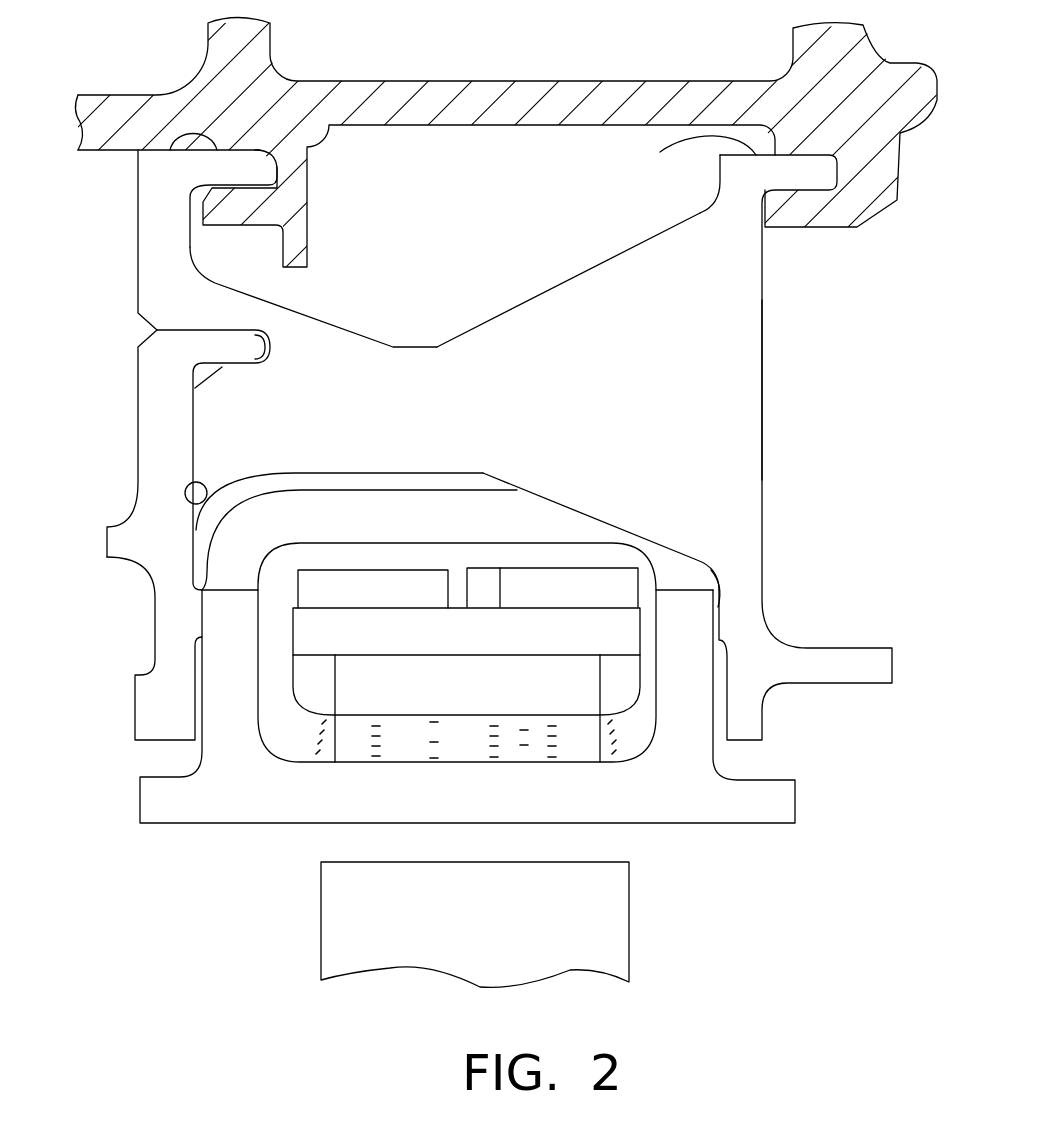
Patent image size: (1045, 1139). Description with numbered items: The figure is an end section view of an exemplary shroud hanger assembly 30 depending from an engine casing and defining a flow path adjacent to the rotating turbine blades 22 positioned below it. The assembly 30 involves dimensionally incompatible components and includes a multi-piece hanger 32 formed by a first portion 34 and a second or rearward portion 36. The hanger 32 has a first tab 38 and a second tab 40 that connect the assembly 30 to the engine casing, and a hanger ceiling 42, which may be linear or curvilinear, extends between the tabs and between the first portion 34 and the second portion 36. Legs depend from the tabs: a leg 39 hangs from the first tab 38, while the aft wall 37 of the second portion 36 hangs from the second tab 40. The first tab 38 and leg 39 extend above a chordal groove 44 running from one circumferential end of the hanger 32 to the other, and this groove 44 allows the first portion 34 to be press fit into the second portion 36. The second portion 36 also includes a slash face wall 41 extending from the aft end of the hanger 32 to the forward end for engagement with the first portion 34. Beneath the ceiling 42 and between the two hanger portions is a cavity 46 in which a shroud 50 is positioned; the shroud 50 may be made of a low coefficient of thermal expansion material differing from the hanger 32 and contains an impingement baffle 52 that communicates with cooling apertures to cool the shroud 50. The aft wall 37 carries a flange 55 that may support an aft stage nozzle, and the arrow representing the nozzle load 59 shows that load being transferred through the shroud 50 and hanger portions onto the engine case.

The turbine blades 22 is at (598, 933).
The shroud hanger assembly 30 is at (663, 67).
The multi-piece hanger 32 is at (452, 178).
The first portion 34 is at (140, 585).
The second portion 36 is at (773, 307).
The aft wall 37 is at (762, 373).
The first tab 38 is at (167, 152).
The leg 39 is at (160, 247).
The second tab 40 is at (662, 151).
The slash face wall 41 is at (622, 332).
The hanger ceiling 42 is at (560, 267).
The chordal groove 44 is at (273, 342).
The cavity 46 is at (465, 482).
The shroud 50 is at (660, 840).
The impingement baffle 52 is at (467, 683).
The flange 55 is at (815, 642).
The nozzle load 59 is at (150, 653).